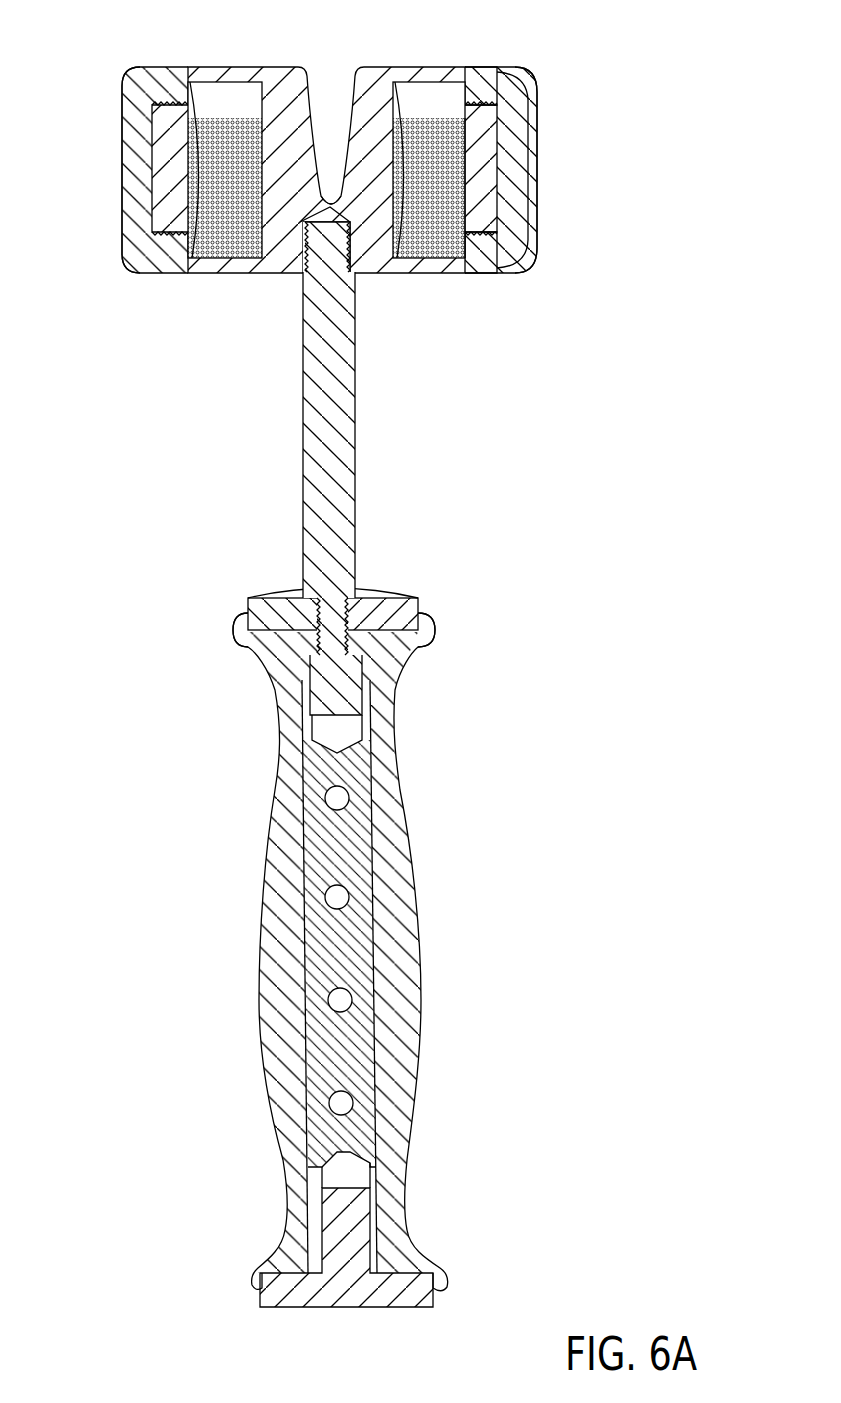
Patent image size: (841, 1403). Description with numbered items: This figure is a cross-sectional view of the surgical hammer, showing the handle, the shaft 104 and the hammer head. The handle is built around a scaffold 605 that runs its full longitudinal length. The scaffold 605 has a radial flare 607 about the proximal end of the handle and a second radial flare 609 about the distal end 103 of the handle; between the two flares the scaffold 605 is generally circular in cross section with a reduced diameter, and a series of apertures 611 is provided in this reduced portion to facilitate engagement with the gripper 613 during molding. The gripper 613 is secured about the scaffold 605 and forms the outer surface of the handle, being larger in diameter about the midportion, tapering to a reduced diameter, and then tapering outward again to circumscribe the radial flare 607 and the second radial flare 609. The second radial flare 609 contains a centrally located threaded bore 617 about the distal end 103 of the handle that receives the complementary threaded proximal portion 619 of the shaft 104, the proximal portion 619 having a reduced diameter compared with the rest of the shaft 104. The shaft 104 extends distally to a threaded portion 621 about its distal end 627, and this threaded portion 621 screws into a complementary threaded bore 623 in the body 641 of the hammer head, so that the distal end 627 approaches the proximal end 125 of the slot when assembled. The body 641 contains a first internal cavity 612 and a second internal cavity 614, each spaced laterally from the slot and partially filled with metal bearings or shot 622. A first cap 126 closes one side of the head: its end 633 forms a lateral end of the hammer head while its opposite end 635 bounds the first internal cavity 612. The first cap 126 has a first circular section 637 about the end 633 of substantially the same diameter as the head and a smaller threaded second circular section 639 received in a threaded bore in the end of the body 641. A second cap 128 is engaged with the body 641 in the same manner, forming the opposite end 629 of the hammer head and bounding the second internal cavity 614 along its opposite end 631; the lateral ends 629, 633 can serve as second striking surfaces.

The distal end of the handle 103 is at (398, 582).
The shaft 104 is at (357, 483).
The proximal end of the slot 125 is at (326, 200).
The first cap 126 is at (510, 183).
The second cap 128 is at (130, 185).
The scaffold 605 is at (358, 1033).
The radial flare 607 is at (355, 1298).
The second radial flare 609 is at (418, 605).
The apertures 611 is at (327, 797).
The gripper 613 is at (273, 916).
The threaded bore 617 is at (302, 612).
The proximal portion of the shaft 619 is at (316, 624).
The threaded portion 621 is at (322, 252).
The metal bearings or shot 622 is at (212, 248).
The bore 623 is at (353, 247).
The distal end of the shaft 627 is at (308, 256).
The opposite end of the hammer head 629 is at (122, 123).
The opposite end of the second cap 631 is at (200, 150).
The end of the first cap 633 is at (537, 160).
The opposite end of the first cap 635 is at (467, 170).
The first circular section 637 is at (512, 222).
The second circular section 639 is at (528, 238).
The body 641 is at (373, 107).
The first internal cavity 612 is at (440, 85).
The second internal cavity 614 is at (228, 90).